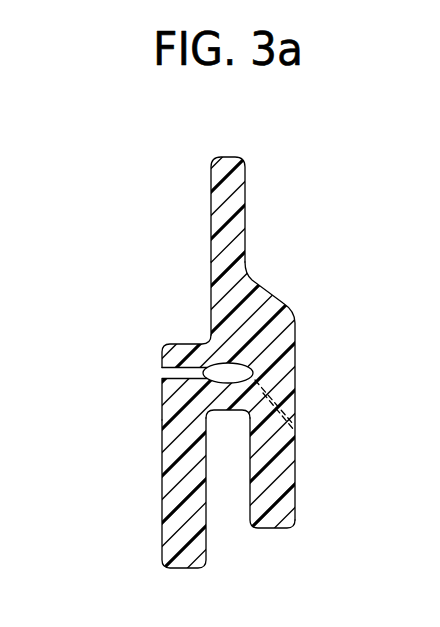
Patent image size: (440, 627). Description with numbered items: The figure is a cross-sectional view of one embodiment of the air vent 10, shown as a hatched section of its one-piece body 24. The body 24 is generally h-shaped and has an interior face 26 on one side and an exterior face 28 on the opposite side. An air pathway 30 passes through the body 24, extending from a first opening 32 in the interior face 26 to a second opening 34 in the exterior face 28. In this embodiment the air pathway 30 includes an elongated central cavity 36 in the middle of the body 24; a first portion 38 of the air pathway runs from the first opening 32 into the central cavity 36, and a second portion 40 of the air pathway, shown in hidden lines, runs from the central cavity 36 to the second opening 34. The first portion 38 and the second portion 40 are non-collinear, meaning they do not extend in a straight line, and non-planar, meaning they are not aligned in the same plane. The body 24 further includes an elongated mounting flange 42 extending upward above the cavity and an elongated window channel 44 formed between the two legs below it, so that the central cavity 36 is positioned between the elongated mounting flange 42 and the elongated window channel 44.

The air vent 10 is at (131, 173).
The elongated mounting flange 42 is at (238, 200).
The one-piece body 24 is at (215, 340).
The central cavity 36 is at (198, 339).
The first opening 32 is at (200, 373).
The first portion of the air pathway 38 is at (162, 396).
The interior face 26 is at (162, 420).
The air pathway 30 is at (196, 381).
The exterior face 28 is at (295, 352).
The second portion of the air pathway 40 is at (295, 390).
The second opening 34 is at (295, 428).
The elongated window channel 44 is at (228, 453).